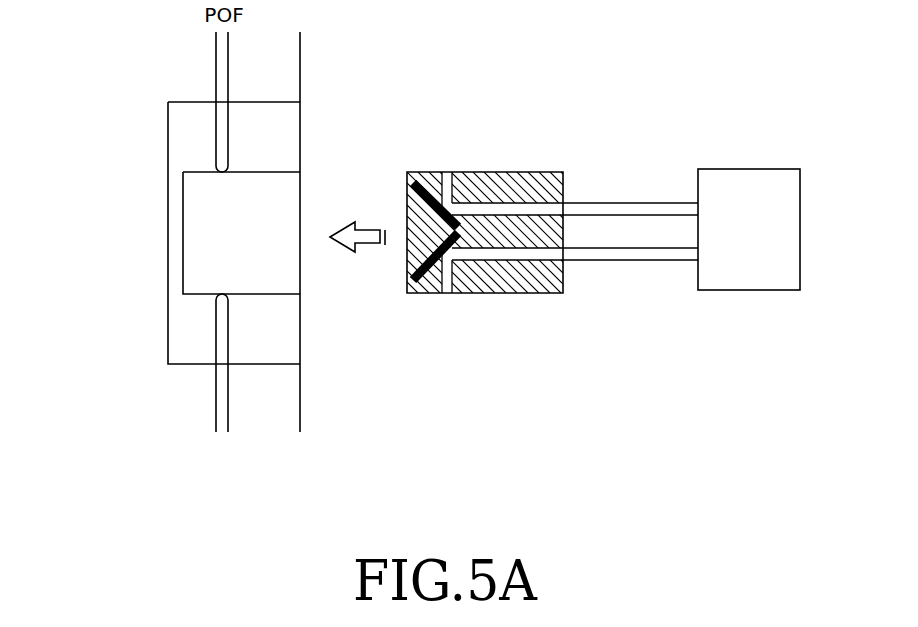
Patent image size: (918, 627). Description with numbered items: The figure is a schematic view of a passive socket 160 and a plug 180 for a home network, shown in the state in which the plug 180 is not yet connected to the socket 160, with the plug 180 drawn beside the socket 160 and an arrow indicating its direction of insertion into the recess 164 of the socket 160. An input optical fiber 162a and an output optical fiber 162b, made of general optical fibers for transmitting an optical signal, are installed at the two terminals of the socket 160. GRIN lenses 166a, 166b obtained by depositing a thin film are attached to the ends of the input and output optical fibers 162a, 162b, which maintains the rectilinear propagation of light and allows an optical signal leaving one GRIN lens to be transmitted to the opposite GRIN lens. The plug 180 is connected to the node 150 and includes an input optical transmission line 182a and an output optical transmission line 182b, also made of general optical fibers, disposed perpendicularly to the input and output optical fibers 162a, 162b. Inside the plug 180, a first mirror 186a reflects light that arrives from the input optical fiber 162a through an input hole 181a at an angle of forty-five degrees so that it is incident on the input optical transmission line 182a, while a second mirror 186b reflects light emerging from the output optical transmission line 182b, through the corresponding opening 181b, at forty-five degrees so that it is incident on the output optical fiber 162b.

The node 150 is at (746, 168).
The passive socket 160 is at (295, 128).
The input optical fiber 162a is at (222, 122).
The output optical fiber 162b is at (222, 391).
The insertion recess 164 is at (322, 182).
The GRIN lens 166a is at (215, 170).
The GRIN lens 166b is at (218, 298).
The plug 180 is at (497, 171).
The input hole 181a is at (447, 187).
The second opening 181b is at (450, 293).
The input optical transmission line 182a is at (523, 208).
The output optical transmission line 182b is at (505, 257).
The first mirror 186a is at (423, 180).
The second mirror 186b is at (427, 293).